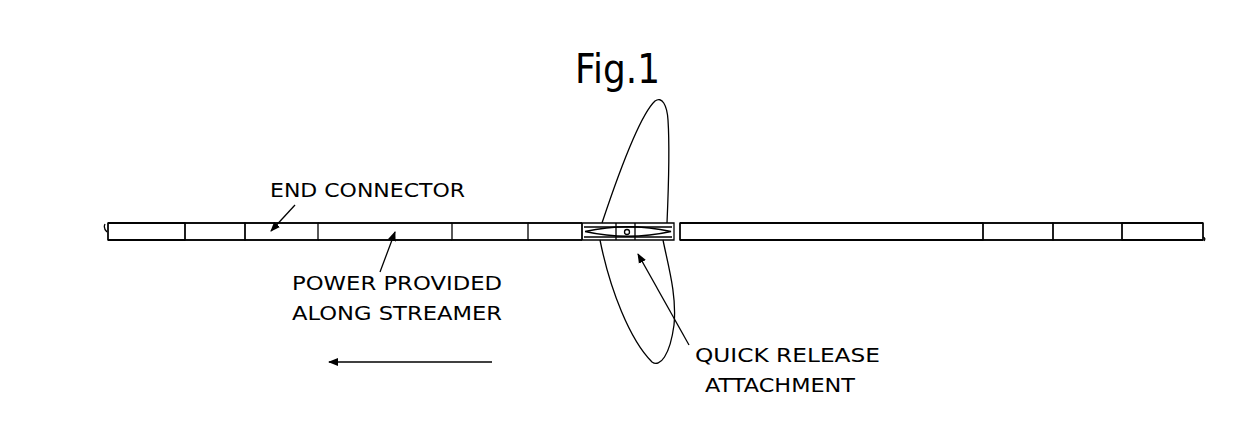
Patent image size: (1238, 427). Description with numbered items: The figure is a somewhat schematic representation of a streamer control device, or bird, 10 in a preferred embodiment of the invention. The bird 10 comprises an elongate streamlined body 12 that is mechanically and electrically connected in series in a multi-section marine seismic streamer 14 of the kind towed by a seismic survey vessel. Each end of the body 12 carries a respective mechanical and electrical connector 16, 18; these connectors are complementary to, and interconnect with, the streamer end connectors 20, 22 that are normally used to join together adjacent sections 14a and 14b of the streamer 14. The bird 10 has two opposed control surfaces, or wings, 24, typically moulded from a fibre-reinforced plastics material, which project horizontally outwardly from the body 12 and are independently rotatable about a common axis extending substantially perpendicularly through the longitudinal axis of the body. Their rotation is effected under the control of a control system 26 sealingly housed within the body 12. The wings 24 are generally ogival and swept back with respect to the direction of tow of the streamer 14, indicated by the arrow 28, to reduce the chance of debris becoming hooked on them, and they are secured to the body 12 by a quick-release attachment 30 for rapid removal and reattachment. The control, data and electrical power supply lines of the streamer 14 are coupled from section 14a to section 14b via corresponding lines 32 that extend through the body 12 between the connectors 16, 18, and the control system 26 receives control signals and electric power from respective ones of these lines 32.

The streamer control device 10 is at (832, 157).
The elongate streamlined body 12 is at (772, 240).
The multi-section marine seismic streamer 14 is at (143, 247).
The streamer section 14a is at (143, 223).
The streamer section 14b is at (1158, 223).
The mechanical and electrical connector 16 is at (256, 232).
The mechanical and electrical connector 18 is at (1022, 240).
The streamer end connector 20 is at (215, 222).
The streamer end connector 22 is at (1088, 223).
The control surfaces 24 is at (642, 124).
The control system 26 is at (502, 223).
The arrow 28 is at (420, 361).
The quick-release attachment 30 is at (634, 223).
The lines 32 is at (928, 223).